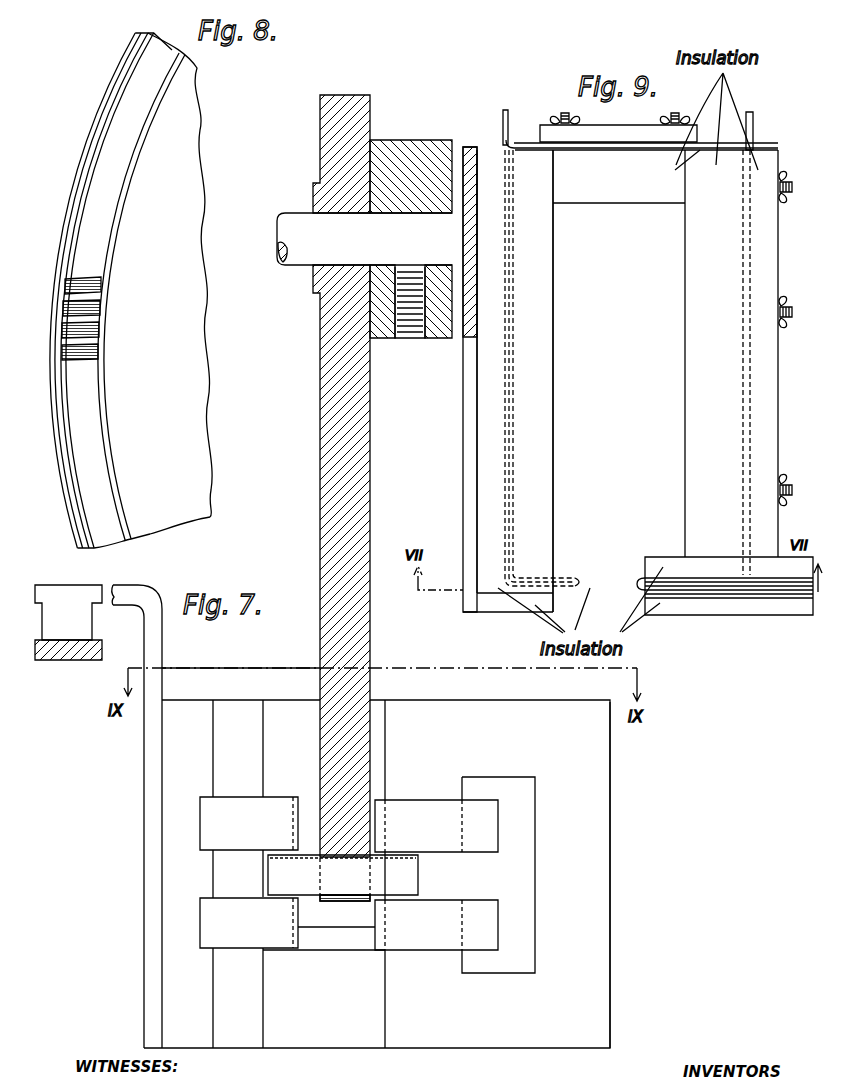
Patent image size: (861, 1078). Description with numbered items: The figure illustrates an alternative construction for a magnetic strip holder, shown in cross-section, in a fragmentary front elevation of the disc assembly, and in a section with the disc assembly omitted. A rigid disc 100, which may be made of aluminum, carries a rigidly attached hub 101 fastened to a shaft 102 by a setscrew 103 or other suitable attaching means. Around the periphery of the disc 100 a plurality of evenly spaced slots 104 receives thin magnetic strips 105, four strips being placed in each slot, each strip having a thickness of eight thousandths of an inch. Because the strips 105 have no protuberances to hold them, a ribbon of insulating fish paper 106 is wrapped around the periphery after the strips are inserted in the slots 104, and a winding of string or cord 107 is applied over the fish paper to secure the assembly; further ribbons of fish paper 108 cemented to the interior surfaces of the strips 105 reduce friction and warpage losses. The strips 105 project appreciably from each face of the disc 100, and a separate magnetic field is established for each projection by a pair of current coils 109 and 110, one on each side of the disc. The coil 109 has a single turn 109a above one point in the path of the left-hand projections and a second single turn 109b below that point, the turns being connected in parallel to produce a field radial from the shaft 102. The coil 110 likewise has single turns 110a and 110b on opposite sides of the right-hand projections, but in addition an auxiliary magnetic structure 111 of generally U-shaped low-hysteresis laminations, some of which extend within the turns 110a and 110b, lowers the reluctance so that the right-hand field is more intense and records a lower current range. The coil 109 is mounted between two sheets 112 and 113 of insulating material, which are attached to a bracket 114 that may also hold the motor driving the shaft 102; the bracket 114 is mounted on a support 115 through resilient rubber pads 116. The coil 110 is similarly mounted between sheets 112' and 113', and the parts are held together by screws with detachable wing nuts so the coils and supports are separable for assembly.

In FIG. 8, the disc 100 is at (185, 413).
In FIG. 7, the disc 100 is at (320, 489).
In FIG. 7, the hub 101 is at (415, 140).
In FIG. 7, the shaft 102 is at (296, 215).
In FIG. 7, the setscrew 103 is at (408, 338).
In FIG. 8, the slots 104 is at (84, 284).
In FIG. 8, the magnetic strips 105 is at (76, 358).
In FIG. 7, the magnetic strips 105 is at (270, 879).
In FIG. 8, the fish paper 106 is at (74, 521).
In FIG. 7, the fish paper 106 is at (322, 900).
In FIG. 8, the string or cord 107 is at (64, 481).
In FIG. 7, the string or cord 107 is at (366, 902).
In FIG. 8, the ribbons of fish paper 108 is at (118, 488).
In FIG. 7, the ribbons of fish paper 108 is at (300, 855).
In FIG. 9, the current coil 109 is at (504, 110).
In FIG. 7, the single turn 109a is at (207, 798).
In FIG. 9, the single turn 109a is at (505, 136).
In FIG. 7, the second single turn 109b is at (210, 940).
In FIG. 9, the current coil 110 is at (754, 116).
In FIG. 7, the single turn 110a is at (447, 847).
In FIG. 9, the single turn 110a is at (754, 134).
In FIG. 7, the single turn 110b is at (440, 906).
In FIG. 7, the auxiliary magnetic structure 111 is at (603, 780).
In FIG. 9, the auxiliary magnetic structure 111 is at (725, 602).
In FIG. 7, the sheet of insulating material 112 is at (213, 846).
In FIG. 9, the sheet of insulating material 112 is at (444, 371).
In FIG. 9, the sheet of insulating material 112' is at (798, 353).
In FIG. 7, the sheet of insulating material 113 is at (265, 846).
In FIG. 9, the sheet of insulating material 113 is at (567, 381).
In FIG. 9, the sheet of insulating material 113' is at (653, 353).
In FIG. 7, the bracket 114 is at (163, 632).
In FIG. 9, the bracket 114 is at (463, 398).
In FIG. 7, the support 115 is at (92, 660).
In FIG. 7, the resilient pads 116 is at (86, 630).